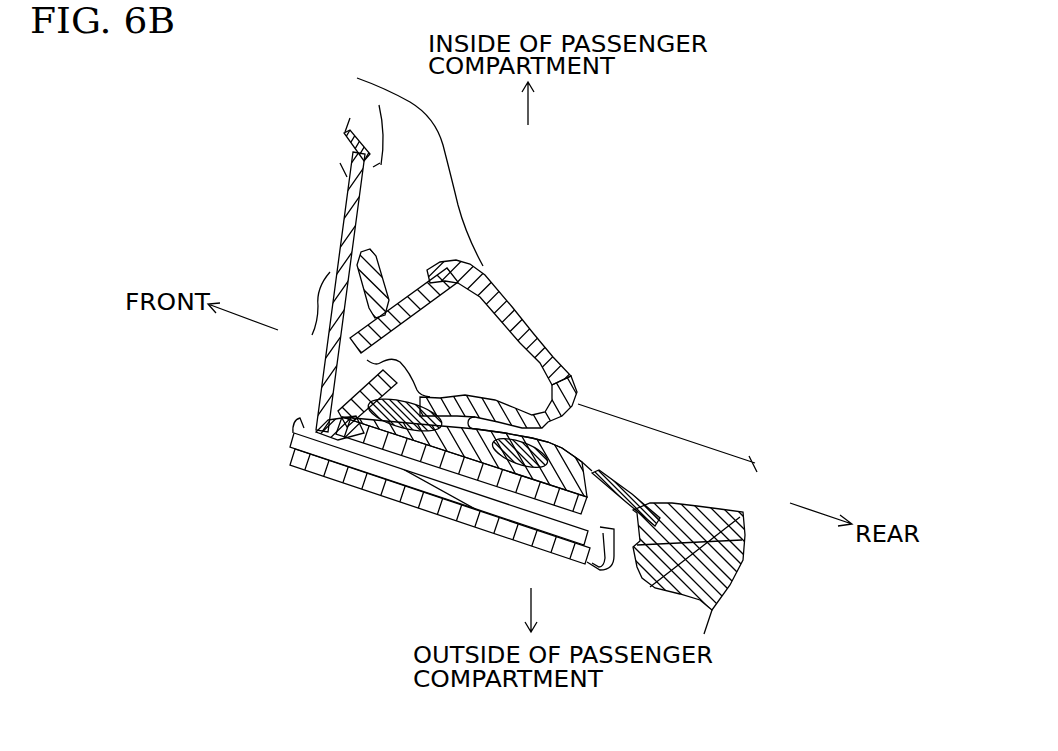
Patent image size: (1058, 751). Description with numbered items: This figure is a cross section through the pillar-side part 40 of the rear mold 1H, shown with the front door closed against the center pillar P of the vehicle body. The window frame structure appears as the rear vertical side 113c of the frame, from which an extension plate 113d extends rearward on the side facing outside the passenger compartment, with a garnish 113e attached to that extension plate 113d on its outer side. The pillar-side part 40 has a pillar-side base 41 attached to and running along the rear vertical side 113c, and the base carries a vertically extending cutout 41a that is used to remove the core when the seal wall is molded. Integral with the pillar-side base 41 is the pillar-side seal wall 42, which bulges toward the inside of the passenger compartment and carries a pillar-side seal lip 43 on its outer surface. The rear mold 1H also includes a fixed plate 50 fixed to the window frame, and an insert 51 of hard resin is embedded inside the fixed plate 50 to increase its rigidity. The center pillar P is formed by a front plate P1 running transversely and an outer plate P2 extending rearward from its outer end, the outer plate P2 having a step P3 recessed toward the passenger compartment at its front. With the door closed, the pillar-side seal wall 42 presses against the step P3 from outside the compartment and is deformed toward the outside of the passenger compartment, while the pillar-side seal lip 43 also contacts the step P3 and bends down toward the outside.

The rear mold 1H is at (438, 270).
The pillar-side part 40 is at (584, 413).
The pillar-side base 41 is at (338, 262).
The cutout 41a is at (333, 384).
The pillar-side seal wall 42 is at (498, 288).
The pillar-side seal lip 43 is at (545, 342).
The fixed plate 50 is at (600, 473).
The insert 51 is at (467, 490).
The rear vertical side of the frame 113c is at (368, 160).
The extension plate 113d is at (393, 460).
The garnish 113e is at (322, 462).
The center pillar P is at (708, 460).
The front plate P1 is at (455, 195).
The outer plate P2 is at (600, 410).
The step P3 is at (543, 473).